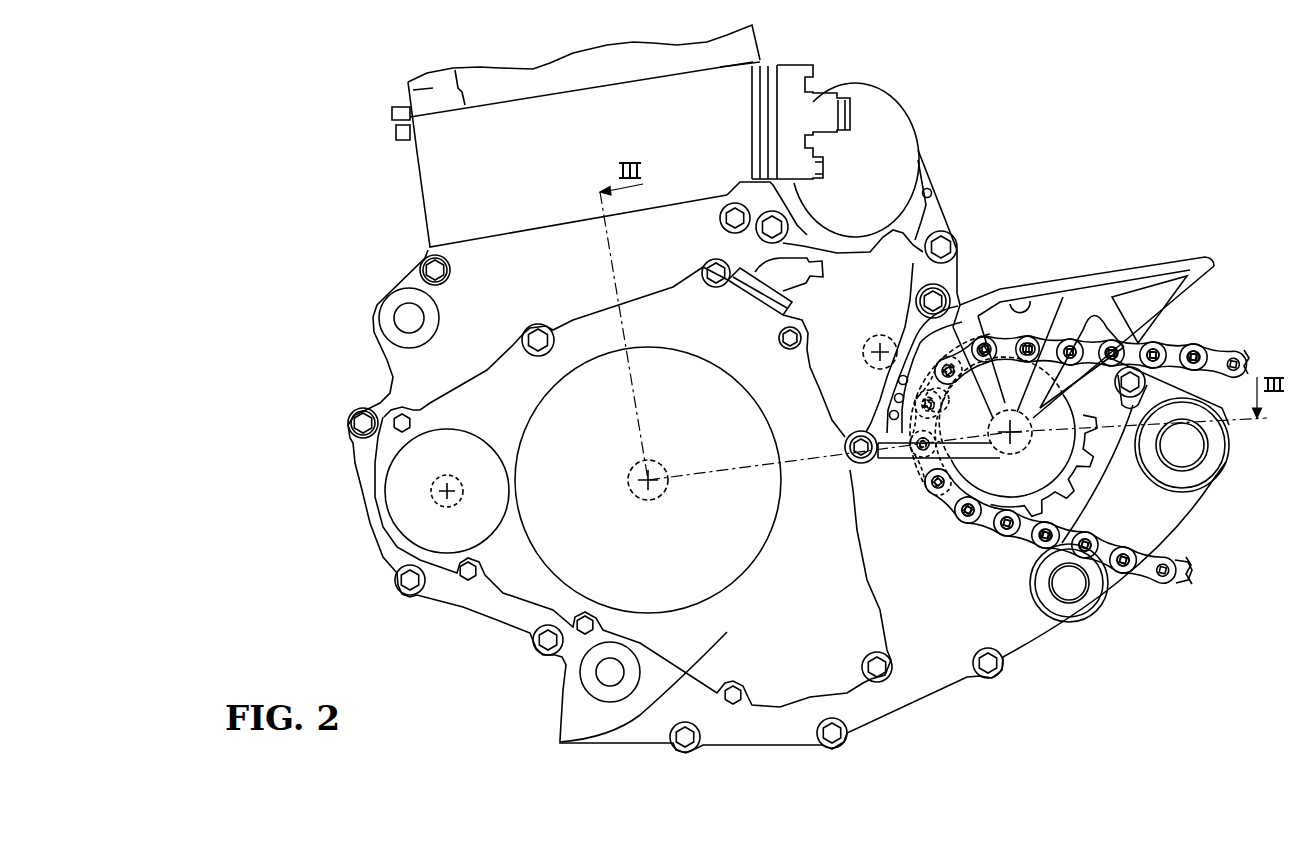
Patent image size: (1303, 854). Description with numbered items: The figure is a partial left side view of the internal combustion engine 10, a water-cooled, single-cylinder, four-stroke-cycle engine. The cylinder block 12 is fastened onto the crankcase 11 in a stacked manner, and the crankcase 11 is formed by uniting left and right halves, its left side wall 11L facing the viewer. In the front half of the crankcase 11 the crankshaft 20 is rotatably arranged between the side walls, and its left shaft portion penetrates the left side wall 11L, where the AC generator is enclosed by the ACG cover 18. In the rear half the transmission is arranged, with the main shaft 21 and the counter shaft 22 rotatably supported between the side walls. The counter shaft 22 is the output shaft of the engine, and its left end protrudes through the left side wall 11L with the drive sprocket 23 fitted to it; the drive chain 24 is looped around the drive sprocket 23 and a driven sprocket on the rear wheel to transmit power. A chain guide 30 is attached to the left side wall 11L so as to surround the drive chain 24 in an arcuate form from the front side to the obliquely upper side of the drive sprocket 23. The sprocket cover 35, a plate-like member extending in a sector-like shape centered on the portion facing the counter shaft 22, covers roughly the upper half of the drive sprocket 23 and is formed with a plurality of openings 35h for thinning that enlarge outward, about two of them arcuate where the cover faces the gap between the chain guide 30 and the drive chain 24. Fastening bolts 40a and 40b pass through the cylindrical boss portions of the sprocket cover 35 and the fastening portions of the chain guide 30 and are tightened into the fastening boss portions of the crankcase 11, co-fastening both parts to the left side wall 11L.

The internal combustion engine 10 is at (366, 310).
The crankcase 11 is at (735, 745).
The left side wall 11L is at (933, 640).
The cylinder block 12 is at (450, 182).
The ACG cover 18 is at (618, 567).
The crankshaft 20 is at (633, 465).
The main shaft 21 is at (880, 334).
The counter shaft 22 is at (990, 470).
The drive sprocket 23 is at (1072, 488).
The drive chain 24 is at (1214, 342).
The chain guide 30 is at (972, 300).
The sprocket cover 35 is at (1093, 277).
The openings 35h is at (1037, 322).
The fastening bolt 40a is at (855, 463).
The fastening bolt 40b is at (935, 215).